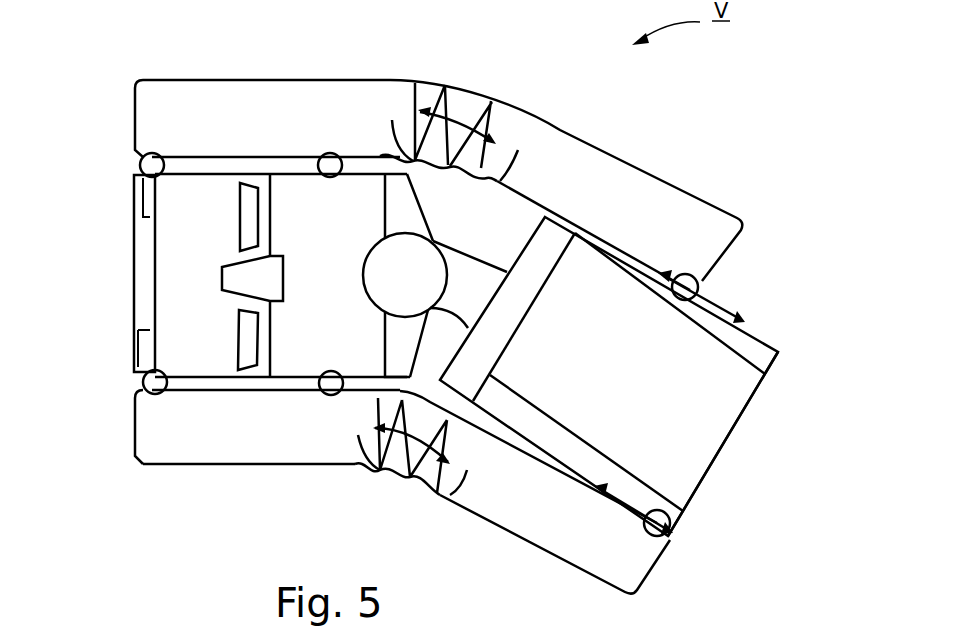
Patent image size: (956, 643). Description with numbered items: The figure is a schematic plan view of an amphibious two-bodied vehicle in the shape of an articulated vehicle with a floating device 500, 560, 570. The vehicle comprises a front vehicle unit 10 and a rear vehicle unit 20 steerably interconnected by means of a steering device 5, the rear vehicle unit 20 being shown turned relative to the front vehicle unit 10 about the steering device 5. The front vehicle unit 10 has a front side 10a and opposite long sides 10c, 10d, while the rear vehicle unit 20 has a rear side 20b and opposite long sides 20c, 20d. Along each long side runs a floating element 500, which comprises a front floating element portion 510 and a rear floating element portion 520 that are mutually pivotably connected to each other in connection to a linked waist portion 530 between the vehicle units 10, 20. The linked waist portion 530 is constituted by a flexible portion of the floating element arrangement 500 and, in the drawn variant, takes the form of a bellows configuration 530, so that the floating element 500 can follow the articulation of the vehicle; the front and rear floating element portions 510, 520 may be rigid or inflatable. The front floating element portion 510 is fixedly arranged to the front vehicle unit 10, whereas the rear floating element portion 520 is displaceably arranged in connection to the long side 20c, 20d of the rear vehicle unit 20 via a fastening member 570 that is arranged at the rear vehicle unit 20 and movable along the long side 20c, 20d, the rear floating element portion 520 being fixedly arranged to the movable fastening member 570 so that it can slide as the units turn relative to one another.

The steering device 5 is at (462, 253).
The front vehicle unit 10 is at (218, 268).
The front side 10a is at (134, 212).
The long side 10c is at (198, 385).
The long side 10d is at (205, 175).
The rear vehicle unit 20 is at (630, 333).
The rear side 20b is at (750, 410).
The long side 20c is at (573, 470).
The long side 20d is at (605, 245).
The floating element 500 is at (433, 72).
The front floating element portion 510 is at (243, 70).
The rear floating element portion 520 is at (652, 162).
The linked waist portion 530 is at (468, 90).
The floating device element 560 is at (148, 163).
The fastening member 570 is at (700, 283).